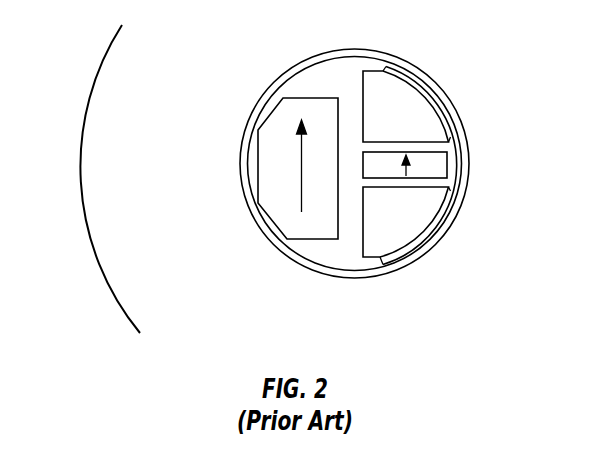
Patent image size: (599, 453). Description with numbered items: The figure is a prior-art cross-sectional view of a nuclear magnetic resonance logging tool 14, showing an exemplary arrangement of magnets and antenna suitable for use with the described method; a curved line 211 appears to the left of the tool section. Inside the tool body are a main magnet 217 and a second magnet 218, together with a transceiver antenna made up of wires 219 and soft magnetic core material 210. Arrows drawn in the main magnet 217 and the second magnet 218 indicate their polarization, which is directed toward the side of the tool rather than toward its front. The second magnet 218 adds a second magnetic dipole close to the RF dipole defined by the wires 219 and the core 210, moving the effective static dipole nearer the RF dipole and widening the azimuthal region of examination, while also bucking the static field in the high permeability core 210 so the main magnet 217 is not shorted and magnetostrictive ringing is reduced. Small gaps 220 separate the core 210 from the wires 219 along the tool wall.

The conduit / hose 14 is at (336, 272).
The core material 210 is at (382, 87).
The curved surface 211 is at (115, 293).
The main magnet 217 is at (278, 217).
The second magnet 218 is at (438, 161).
The wires 219 is at (444, 112).
The gap 220 is at (449, 147).